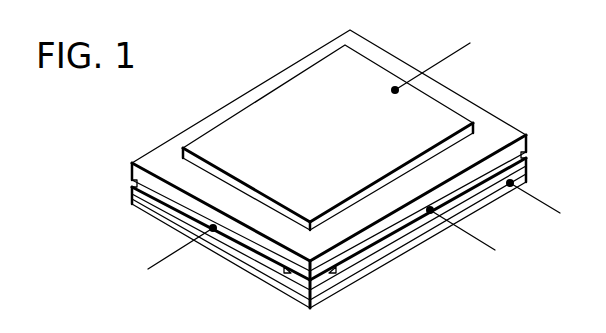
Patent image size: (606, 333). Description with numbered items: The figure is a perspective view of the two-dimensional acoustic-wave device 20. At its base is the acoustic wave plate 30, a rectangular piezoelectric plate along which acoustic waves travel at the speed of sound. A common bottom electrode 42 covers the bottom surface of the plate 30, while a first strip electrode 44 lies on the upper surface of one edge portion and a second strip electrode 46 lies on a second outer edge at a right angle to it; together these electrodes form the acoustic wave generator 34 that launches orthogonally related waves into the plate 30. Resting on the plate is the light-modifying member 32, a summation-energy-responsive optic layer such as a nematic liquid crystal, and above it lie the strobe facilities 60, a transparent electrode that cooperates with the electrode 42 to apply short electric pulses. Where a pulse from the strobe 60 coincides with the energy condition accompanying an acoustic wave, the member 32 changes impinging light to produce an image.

The two-dimensional device 20 is at (126, 122).
The acoustic wave plate 30 is at (133, 205).
The light-modifying member 32 is at (493, 125).
The acoustic wave generator 34 is at (557, 326).
The common bottom electrode 42 is at (353, 278).
The first strip electrode 44 is at (410, 229).
The second strip electrode 46 is at (249, 251).
The strobe facilities 60 is at (361, 72).